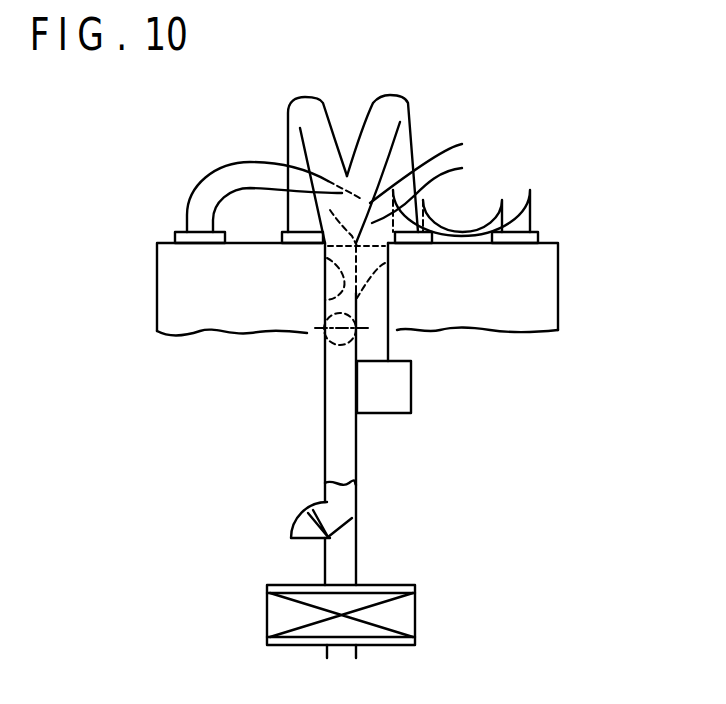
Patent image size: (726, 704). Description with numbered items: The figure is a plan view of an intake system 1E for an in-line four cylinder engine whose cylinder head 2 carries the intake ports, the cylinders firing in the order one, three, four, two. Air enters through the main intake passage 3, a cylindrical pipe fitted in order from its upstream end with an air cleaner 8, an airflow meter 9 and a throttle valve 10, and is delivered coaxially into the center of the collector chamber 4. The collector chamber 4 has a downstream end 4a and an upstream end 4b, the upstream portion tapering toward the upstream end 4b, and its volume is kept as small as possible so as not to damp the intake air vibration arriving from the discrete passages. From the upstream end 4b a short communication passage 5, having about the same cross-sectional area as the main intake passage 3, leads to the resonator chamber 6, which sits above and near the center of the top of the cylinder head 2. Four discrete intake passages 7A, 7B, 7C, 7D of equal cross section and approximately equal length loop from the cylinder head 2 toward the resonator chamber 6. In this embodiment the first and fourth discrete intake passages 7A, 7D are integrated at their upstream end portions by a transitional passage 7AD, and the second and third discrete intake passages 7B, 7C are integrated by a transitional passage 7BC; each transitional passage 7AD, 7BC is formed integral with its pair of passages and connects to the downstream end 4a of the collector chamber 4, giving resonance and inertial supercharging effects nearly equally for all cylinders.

The intake system 1E is at (536, 85).
The cylinder head 2 is at (558, 285).
The main intake passage 3 is at (356, 500).
The collector chamber 4 is at (378, 260).
The downstream end of collector chamber 4a is at (325, 260).
The upstream end of collector chamber 4b is at (325, 300).
The communication passage 5 is at (388, 305).
The resonator chamber 6 is at (411, 392).
The first discrete intake passage 7A is at (506, 153).
The second discrete intake passage 7B is at (402, 94).
The third discrete intake passage 7C is at (306, 95).
The fourth discrete intake passage 7D is at (201, 184).
The transitional passage 7AD is at (420, 155).
The transitional passage 7BC is at (287, 157).
The air cleaner 8 is at (415, 617).
The airflow meter 9 is at (296, 524).
The throttle valve 10 is at (325, 355).